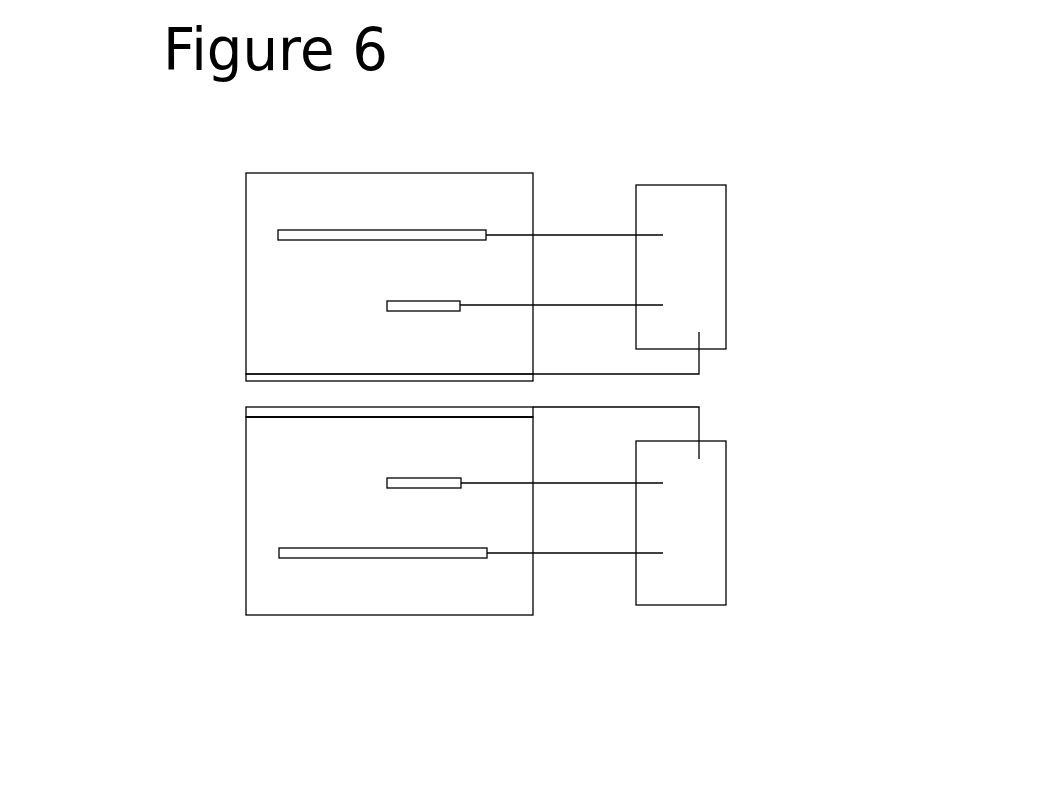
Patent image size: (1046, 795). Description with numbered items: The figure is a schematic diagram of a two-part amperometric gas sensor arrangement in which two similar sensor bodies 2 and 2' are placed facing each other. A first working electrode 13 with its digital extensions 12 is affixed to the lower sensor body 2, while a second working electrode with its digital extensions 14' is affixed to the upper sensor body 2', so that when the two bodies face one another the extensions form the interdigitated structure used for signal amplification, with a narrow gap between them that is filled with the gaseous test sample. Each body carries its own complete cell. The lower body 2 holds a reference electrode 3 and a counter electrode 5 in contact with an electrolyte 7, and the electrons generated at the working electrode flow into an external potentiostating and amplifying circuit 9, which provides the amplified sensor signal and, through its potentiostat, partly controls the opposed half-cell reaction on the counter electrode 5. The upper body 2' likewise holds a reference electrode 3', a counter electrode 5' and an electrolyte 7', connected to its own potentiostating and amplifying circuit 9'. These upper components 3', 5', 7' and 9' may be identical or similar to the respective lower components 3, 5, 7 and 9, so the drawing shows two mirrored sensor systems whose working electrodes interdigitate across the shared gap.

The sensor body 2' is at (466, 242).
The reference electrode 3' is at (365, 289).
The counter electrode 5' is at (359, 225).
The electrolyte 7' is at (293, 273).
The potentiostating and amplifying circuit 9' is at (761, 267).
The digital extensions 14' is at (574, 372).
The digital extensions 12 is at (247, 407).
The working electrode 13 is at (458, 428).
The cell body 2 is at (458, 559).
The reference electrode 3 is at (373, 465).
The counter electrode 5 is at (423, 605).
The electrolyte 7 is at (307, 516).
The potentiostating and amplifying circuit 9 is at (759, 523).